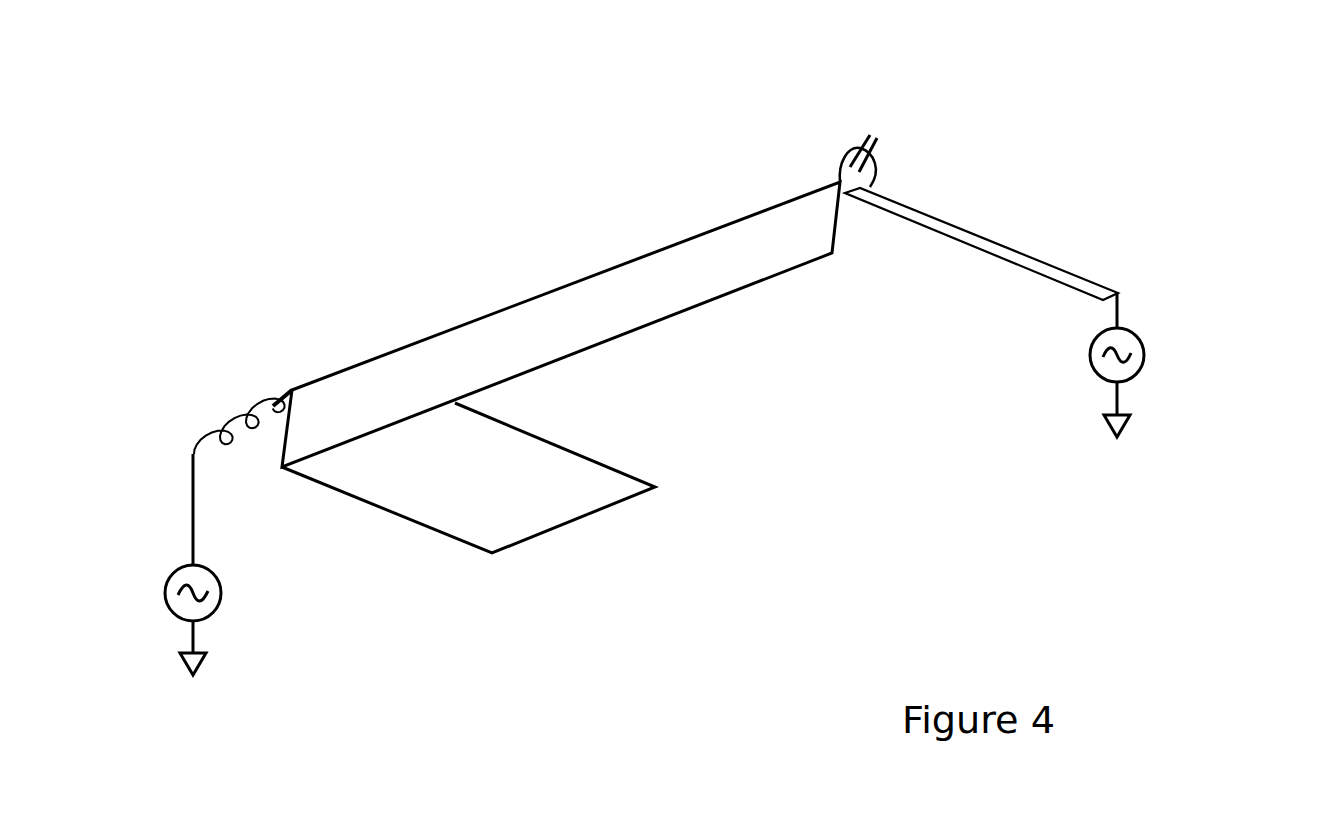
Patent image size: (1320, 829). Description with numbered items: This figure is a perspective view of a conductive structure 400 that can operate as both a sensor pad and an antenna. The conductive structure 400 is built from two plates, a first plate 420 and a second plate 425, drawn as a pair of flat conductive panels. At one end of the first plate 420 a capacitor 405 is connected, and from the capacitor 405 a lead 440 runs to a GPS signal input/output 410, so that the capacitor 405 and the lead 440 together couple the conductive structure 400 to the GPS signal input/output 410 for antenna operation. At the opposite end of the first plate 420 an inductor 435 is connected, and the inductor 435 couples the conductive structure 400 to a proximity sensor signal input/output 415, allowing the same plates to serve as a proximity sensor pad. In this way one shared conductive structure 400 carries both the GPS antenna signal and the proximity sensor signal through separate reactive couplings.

The conductive structure 400 is at (1166, 166).
The capacitor 405 is at (867, 137).
The GPS signal input/output 410 is at (1174, 365).
The proximity sensor signal input/output 415 is at (280, 564).
The first plate 420 is at (577, 281).
The second plate 425 is at (612, 553).
The inductor 435 is at (243, 410).
The lead 440 is at (925, 227).